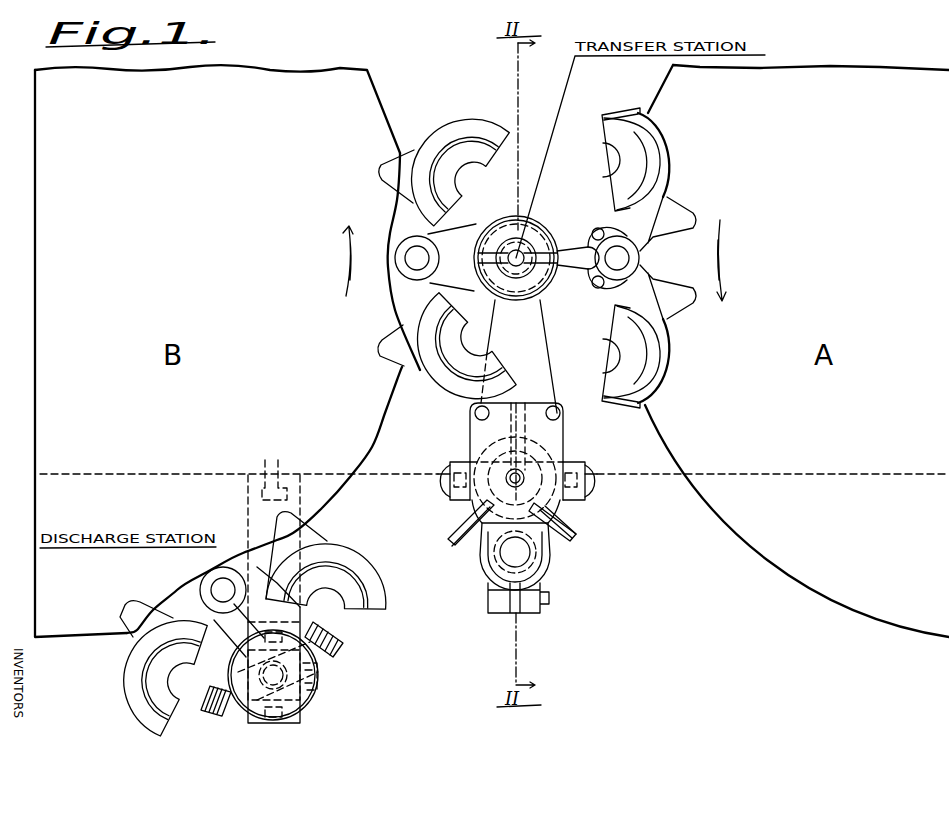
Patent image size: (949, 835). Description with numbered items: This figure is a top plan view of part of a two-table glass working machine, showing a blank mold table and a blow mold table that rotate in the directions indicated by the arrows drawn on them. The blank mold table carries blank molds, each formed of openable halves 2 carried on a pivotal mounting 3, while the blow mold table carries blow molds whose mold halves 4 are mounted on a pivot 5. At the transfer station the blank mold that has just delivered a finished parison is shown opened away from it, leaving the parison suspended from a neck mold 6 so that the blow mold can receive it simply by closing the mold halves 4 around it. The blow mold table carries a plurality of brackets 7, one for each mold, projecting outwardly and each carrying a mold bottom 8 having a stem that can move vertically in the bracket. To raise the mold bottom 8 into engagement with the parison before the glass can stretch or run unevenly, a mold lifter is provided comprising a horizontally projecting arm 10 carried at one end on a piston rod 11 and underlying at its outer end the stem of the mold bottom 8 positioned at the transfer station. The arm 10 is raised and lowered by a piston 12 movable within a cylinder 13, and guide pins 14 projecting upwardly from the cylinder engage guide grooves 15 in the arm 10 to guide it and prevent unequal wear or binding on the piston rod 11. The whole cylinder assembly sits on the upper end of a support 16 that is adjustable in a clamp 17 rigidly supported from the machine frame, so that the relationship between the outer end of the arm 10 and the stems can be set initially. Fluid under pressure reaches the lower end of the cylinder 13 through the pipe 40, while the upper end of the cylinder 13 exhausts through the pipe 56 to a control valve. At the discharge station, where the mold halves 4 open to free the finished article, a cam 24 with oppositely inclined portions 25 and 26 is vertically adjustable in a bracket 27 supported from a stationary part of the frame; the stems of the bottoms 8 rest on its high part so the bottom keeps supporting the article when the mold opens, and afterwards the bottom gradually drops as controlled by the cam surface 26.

The openable halves 2 is at (655, 157).
The pivotal mounting 3 is at (627, 257).
The mold halves 4 is at (450, 132).
The pivot 5 is at (415, 257).
The neck mold 6 is at (533, 240).
The bracket 7 is at (460, 233).
The mold bottom 8 is at (527, 290).
The arm 10 is at (538, 352).
The piston rod 11 is at (523, 477).
The piston 12 is at (472, 448).
The cylinder 13 is at (563, 508).
The guide pins 14 is at (450, 485).
The guide grooves 15 is at (462, 493).
The support 16 is at (525, 552).
The clamp 17 is at (488, 580).
The cam 24 is at (318, 668).
The inclined portion 25 is at (211, 705).
The inclined portion 26 is at (336, 633).
The bracket 27 is at (258, 723).
The pipe 40 is at (573, 532).
The pipe 56 is at (457, 543).